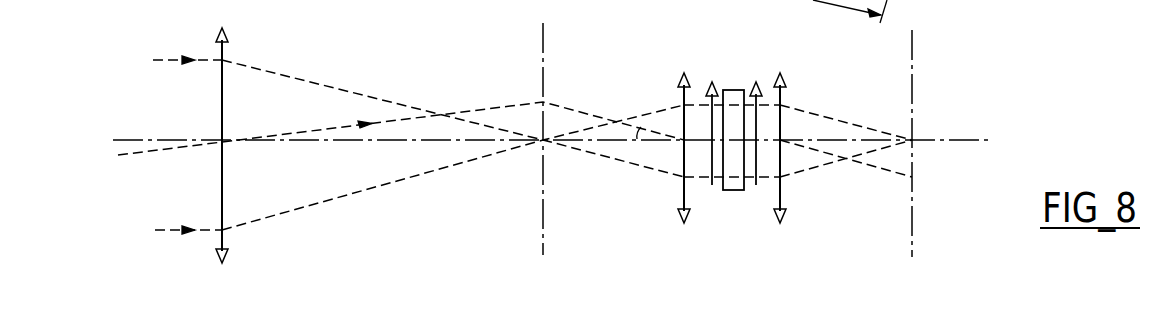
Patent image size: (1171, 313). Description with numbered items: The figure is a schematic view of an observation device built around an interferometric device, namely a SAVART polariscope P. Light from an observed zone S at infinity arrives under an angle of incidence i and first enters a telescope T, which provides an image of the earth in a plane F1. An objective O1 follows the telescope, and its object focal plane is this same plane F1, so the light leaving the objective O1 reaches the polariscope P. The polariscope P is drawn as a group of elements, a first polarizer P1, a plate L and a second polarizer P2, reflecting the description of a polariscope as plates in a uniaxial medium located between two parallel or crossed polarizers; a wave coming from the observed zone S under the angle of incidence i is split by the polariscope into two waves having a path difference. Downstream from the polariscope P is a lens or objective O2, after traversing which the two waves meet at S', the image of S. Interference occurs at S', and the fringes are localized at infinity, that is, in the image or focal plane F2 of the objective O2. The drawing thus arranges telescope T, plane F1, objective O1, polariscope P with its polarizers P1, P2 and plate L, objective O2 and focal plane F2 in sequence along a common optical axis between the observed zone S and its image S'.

The telescope T is at (222, 83).
The observed zone S is at (390, 140).
The plane F1 is at (543, 45).
The angle of incidence i is at (626, 131).
The objective O1 is at (684, 92).
The SAVART polariscope P is at (763, 70).
The first polarizer P1 is at (709, 170).
The plate L is at (732, 190).
The second polarizer P2 is at (754, 185).
The objective O2 is at (780, 92).
The image of S S' is at (861, 169).
The focal plane F2 is at (912, 45).